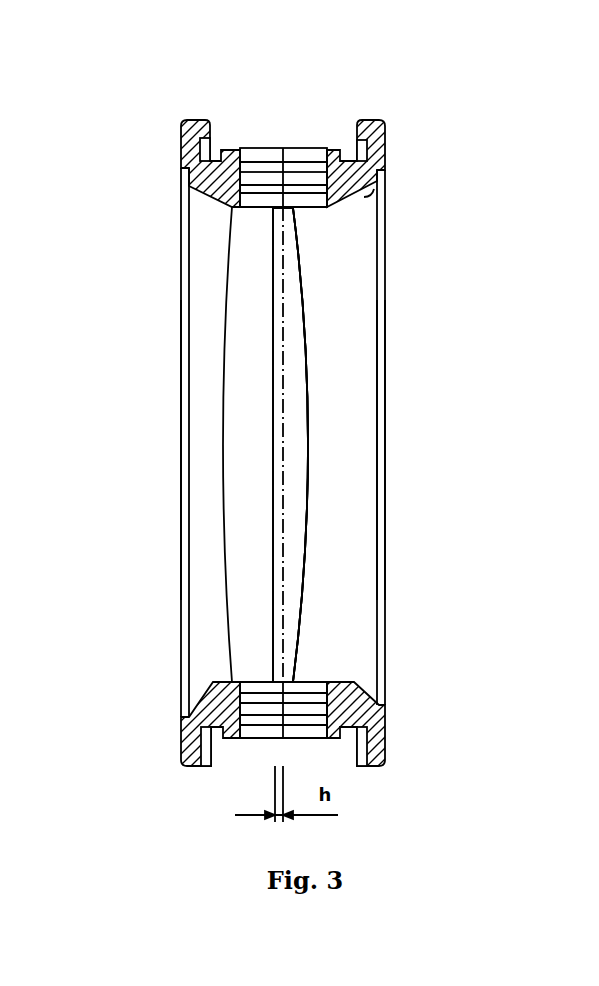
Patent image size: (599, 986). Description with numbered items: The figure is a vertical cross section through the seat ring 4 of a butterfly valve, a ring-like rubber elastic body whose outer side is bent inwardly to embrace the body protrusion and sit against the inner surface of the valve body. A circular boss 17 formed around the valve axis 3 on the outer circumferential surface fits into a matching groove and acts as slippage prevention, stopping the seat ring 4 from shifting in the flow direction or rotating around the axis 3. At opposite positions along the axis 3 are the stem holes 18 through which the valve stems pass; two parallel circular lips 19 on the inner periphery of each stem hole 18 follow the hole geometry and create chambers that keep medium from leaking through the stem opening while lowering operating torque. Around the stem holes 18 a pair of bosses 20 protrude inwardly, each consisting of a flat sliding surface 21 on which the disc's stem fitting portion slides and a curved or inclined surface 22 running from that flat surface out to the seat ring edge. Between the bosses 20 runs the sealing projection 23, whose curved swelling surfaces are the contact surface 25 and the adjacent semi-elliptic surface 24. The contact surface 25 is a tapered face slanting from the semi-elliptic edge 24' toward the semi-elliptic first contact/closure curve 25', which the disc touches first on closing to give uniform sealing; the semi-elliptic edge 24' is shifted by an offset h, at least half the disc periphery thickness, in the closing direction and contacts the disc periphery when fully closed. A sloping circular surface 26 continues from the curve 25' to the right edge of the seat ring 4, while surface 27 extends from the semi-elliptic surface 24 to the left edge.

The valve axis 3 is at (290, 582).
The seat ring 4 is at (170, 643).
The circular boss 17 is at (234, 150).
The stem holes 18 is at (273, 176).
The circular lips 19 is at (314, 163).
The bosses 20 is at (228, 206).
The flat sliding surface 21 is at (370, 194).
The curved/inclined surface 22 is at (338, 208).
The sealing projection 23 is at (296, 299).
The semi-elliptic surface 24 is at (150, 444).
The semi-elliptic edge 24' is at (164, 445).
The contact surface 25 is at (404, 445).
The semi-elliptic first contact/closure curve 25' is at (406, 445).
The sloping circular surface 26 is at (345, 513).
The surface 27 is at (201, 530).